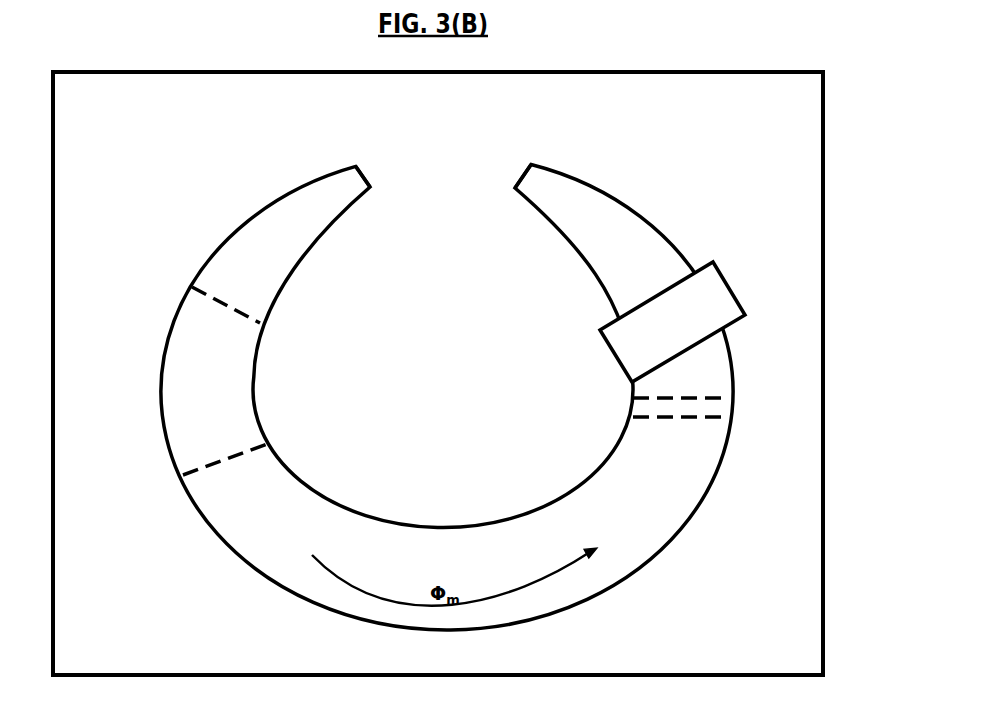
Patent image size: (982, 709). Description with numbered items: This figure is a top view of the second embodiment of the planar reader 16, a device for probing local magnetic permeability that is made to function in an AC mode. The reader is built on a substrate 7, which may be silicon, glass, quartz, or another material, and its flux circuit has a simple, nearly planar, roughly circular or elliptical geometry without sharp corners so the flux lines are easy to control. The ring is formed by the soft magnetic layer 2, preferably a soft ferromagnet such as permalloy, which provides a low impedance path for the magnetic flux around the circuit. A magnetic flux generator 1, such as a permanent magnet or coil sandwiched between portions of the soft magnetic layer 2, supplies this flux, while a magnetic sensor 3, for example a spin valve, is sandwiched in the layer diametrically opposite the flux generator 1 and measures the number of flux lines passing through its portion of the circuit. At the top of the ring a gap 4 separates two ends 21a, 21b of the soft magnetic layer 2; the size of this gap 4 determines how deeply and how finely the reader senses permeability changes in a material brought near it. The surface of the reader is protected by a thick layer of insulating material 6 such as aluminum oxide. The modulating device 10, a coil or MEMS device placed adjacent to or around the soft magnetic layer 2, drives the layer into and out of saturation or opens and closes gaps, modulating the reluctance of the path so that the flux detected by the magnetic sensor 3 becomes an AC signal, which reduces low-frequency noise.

The magnetic flux generator 1 is at (162, 408).
The soft magnetic layer 2 is at (228, 238).
The magnetic sensor 3 is at (727, 407).
The gap 4 is at (452, 172).
The insulating material 6 is at (281, 253).
The substrate 7 is at (807, 107).
The modulating device 10 is at (707, 300).
The planar reader 16 is at (855, 275).
The end of the soft magnetic layer 21a is at (372, 177).
The end of the soft magnetic layer 21b is at (512, 181).